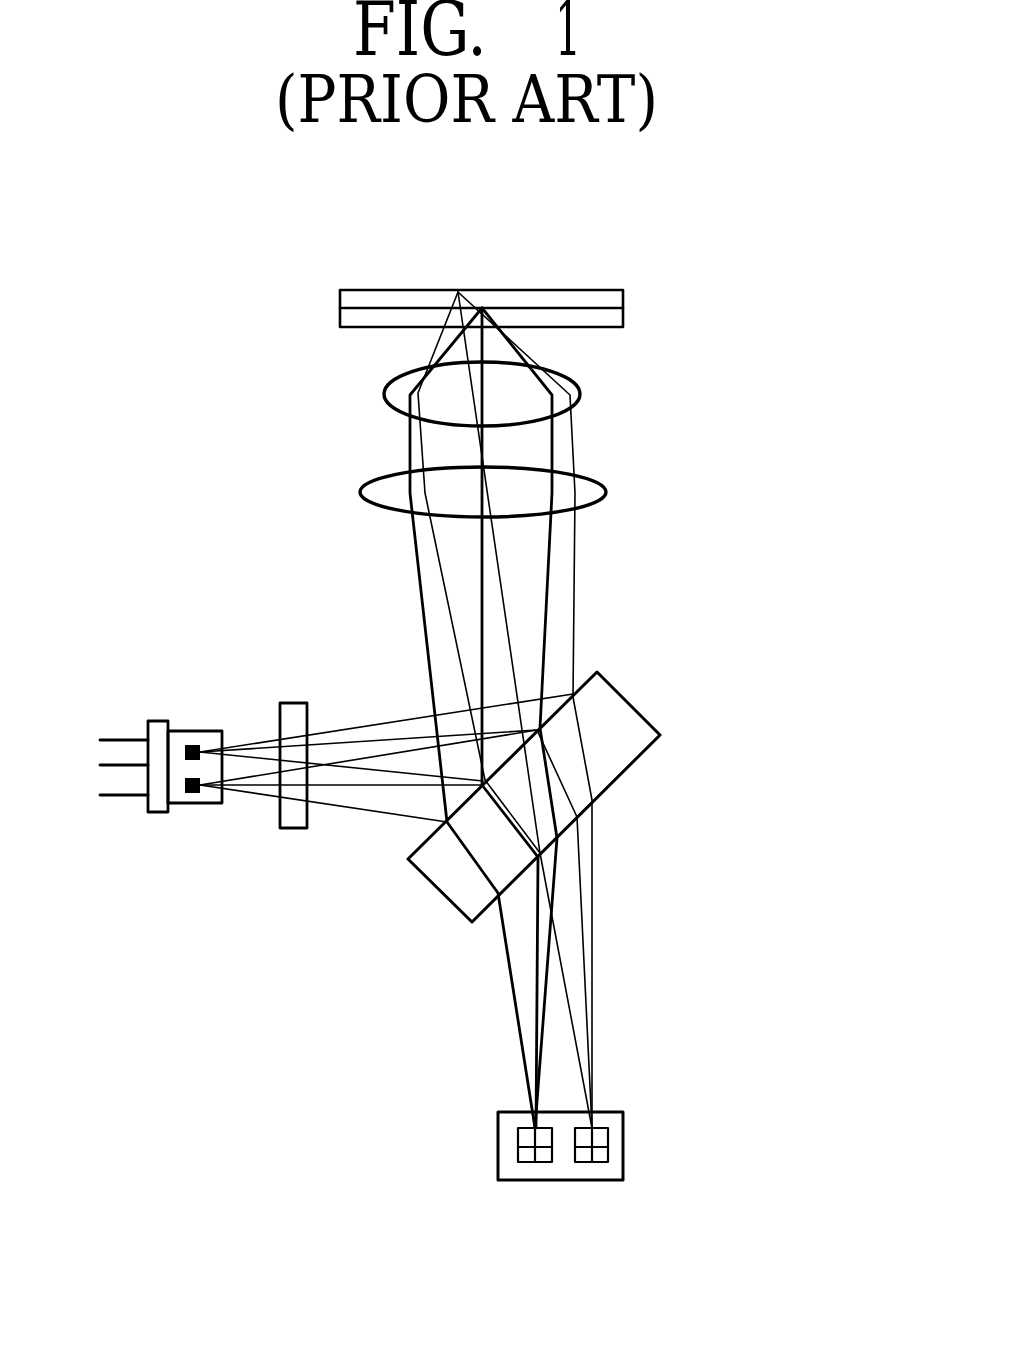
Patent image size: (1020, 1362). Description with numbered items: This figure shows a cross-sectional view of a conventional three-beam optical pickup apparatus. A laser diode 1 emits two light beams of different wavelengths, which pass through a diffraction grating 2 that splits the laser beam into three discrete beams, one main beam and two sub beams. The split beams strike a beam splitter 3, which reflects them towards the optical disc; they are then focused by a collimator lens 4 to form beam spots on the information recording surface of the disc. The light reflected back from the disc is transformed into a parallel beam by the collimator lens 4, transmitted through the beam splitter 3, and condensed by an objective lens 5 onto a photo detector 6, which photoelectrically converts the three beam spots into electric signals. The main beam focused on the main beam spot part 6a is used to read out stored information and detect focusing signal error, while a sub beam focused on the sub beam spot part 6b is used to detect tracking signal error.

The LD (Laser Diode) 1 is at (186, 731).
The diffraction grating 2 is at (292, 703).
The beam splitter 3 is at (628, 762).
The collimator lens 4 is at (608, 492).
The objective lens 5 is at (578, 385).
The photo detector 6 is at (625, 1142).
The main beam spot part 6a is at (528, 1158).
The sub beam spot part 6b is at (602, 1158).